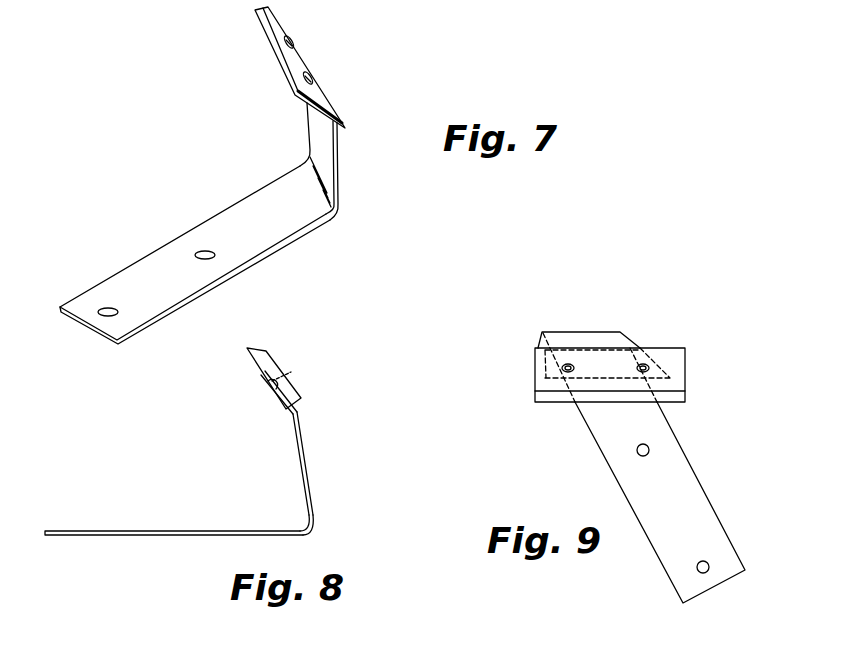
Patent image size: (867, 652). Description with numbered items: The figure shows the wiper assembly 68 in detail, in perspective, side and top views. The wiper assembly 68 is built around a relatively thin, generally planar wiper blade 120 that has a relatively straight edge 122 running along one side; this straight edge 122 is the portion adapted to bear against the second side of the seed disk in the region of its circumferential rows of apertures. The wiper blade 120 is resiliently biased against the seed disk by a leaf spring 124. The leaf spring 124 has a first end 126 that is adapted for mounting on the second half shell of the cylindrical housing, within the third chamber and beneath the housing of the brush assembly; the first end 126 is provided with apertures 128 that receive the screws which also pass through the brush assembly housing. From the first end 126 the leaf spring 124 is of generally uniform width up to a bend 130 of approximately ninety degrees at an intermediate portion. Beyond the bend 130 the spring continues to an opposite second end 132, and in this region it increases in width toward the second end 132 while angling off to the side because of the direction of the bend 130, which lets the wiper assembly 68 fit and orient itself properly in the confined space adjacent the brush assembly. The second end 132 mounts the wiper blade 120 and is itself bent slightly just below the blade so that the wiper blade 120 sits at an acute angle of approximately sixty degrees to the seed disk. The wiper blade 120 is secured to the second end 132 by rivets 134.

In FIG. 7, the wiper assembly 68 is at (205, 30).
In FIG. 8, the wiper assembly 68 is at (353, 417).
In FIG. 9, the wiper assembly 68 is at (722, 397).
In FIG. 7, the wiper blade 120 is at (325, 67).
In FIG. 8, the wiper blade 120 is at (312, 367).
In FIG. 9, the wiper blade 120 is at (631, 346).
In FIG. 7, the straight edge 122 is at (272, 57).
In FIG. 8, the straight edge 122 is at (245, 340).
In FIG. 9, the straight edge 122 is at (552, 404).
In FIG. 7, the leaf spring 124 is at (195, 255).
In FIG. 8, the leaf spring 124 is at (308, 453).
In FIG. 9, the leaf spring 124 is at (644, 468).
In FIG. 7, the first end 126 is at (97, 320).
In FIG. 8, the first end 126 is at (72, 530).
In FIG. 9, the first end 126 is at (700, 586).
In FIG. 7, the apertures 128 is at (198, 248).
In FIG. 9, the apertures 128 is at (650, 450).
In FIG. 7, the bend 130 is at (336, 217).
In FIG. 8, the bend 130 is at (311, 522).
In FIG. 7, the second end 132 is at (338, 147).
In FIG. 8, the second end 132 is at (296, 412).
In FIG. 9, the second end 132 is at (594, 335).
In FIG. 7, the rivets 134 is at (297, 40).
In FIG. 8, the rivets 134 is at (293, 375).
In FIG. 9, the rivets 134 is at (567, 364).